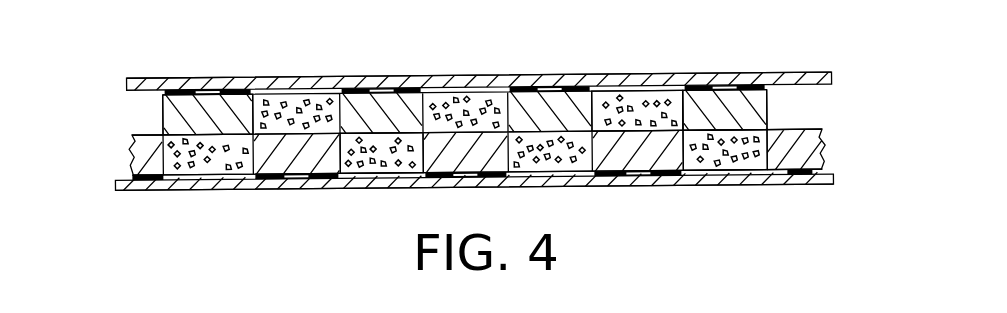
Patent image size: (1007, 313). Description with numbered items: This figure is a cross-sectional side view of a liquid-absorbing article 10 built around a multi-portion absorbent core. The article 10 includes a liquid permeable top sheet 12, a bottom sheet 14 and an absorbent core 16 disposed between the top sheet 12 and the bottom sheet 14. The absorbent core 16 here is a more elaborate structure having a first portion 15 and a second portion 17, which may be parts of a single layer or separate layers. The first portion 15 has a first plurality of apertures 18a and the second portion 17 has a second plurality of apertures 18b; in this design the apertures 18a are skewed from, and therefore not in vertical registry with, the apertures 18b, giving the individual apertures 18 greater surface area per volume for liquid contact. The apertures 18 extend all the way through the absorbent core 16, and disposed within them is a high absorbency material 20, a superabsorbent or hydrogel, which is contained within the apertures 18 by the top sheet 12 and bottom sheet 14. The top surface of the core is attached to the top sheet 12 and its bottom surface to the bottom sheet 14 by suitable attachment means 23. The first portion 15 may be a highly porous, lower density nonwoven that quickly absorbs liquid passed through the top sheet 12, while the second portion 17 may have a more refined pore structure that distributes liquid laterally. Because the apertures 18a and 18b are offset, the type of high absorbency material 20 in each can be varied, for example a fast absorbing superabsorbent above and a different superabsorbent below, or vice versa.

The liquid-absorbing article 10 is at (740, 52).
The liquid permeable top sheet 12 is at (795, 72).
The bottom sheet 14 is at (752, 186).
The first portion 15 is at (173, 113).
The absorbent core 16 is at (832, 124).
The second portion 17 is at (143, 152).
The apertures 18 is at (727, 168).
The first plurality of apertures 18a is at (640, 98).
The second plurality of apertures 18b is at (373, 162).
The high absorbency material 20 is at (297, 100).
The attachment means 23 is at (240, 91).